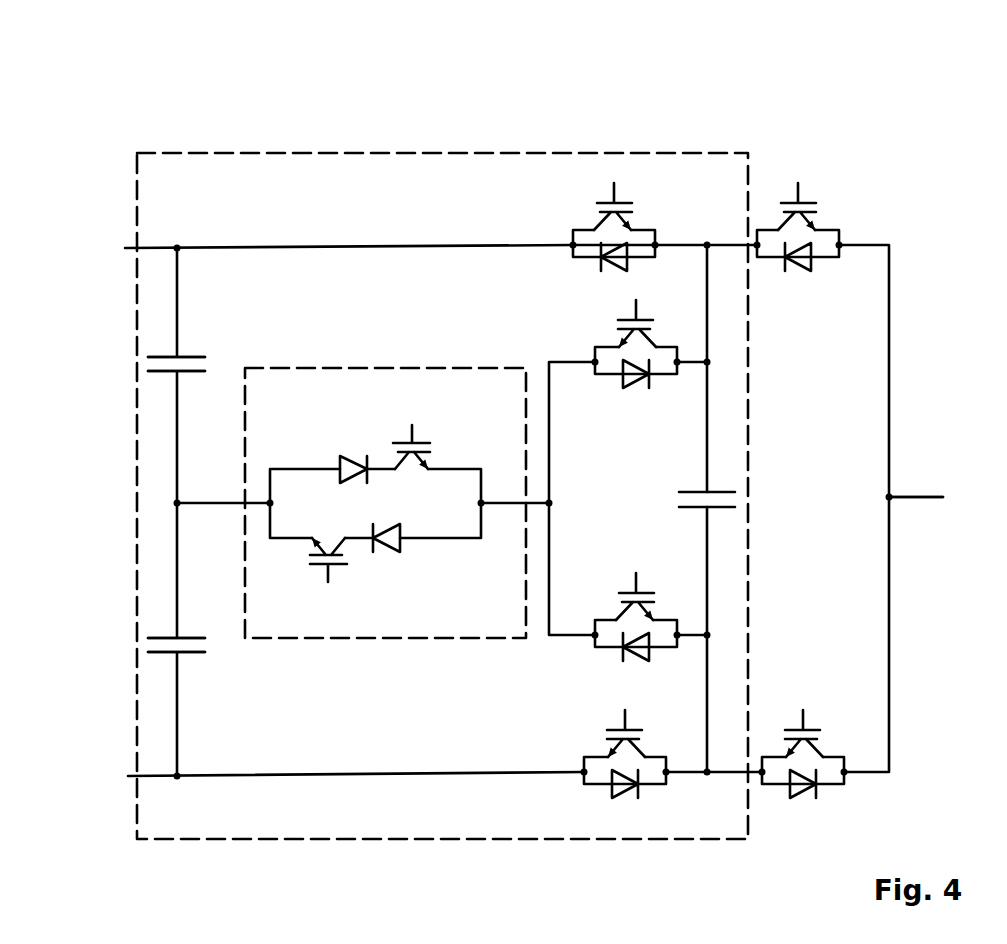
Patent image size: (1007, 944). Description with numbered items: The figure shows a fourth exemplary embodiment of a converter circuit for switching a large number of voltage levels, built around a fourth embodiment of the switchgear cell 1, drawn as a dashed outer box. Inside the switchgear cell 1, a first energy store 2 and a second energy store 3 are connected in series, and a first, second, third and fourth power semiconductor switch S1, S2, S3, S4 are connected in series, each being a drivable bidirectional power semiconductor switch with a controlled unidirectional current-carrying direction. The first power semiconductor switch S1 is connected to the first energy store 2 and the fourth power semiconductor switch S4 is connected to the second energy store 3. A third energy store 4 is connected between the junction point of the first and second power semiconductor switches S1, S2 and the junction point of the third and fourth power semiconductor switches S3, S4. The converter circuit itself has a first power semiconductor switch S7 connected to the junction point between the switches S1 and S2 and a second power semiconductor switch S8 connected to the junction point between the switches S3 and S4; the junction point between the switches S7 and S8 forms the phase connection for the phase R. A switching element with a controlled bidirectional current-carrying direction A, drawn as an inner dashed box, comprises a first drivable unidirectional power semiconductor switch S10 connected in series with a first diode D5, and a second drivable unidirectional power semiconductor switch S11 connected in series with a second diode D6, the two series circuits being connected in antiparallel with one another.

The switchgear cell 1 is at (353, 153).
The first energy store 2 is at (170, 357).
The second energy store 3 is at (170, 638).
The third energy store 4 is at (725, 492).
The switching element with a controlled bidirectional current-carrying direction A is at (363, 331).
The first power semiconductor switch S1 is at (628, 224).
The second power semiconductor switch S2 is at (643, 344).
The third power semiconductor switch S3 is at (643, 617).
The fourth power semiconductor switch S4 is at (628, 767).
The first power semiconductor switch of the converter circuit S7 is at (812, 223).
The second power semiconductor switch of the converter circuit S8 is at (805, 767).
The first drivable unidirectional power semiconductor switch with a controlled unidi S10 is at (435, 447).
The second drivable unidirectional power semiconductor switch with a controlled unid S11 is at (307, 564).
The first unidirectional power semiconductor switch with an uncontrolled unidirectio D5 is at (336, 457).
The second unidirectional power semiconductor switch with an uncontrolled unidirecti D6 is at (403, 557).
The phase R is at (929, 498).